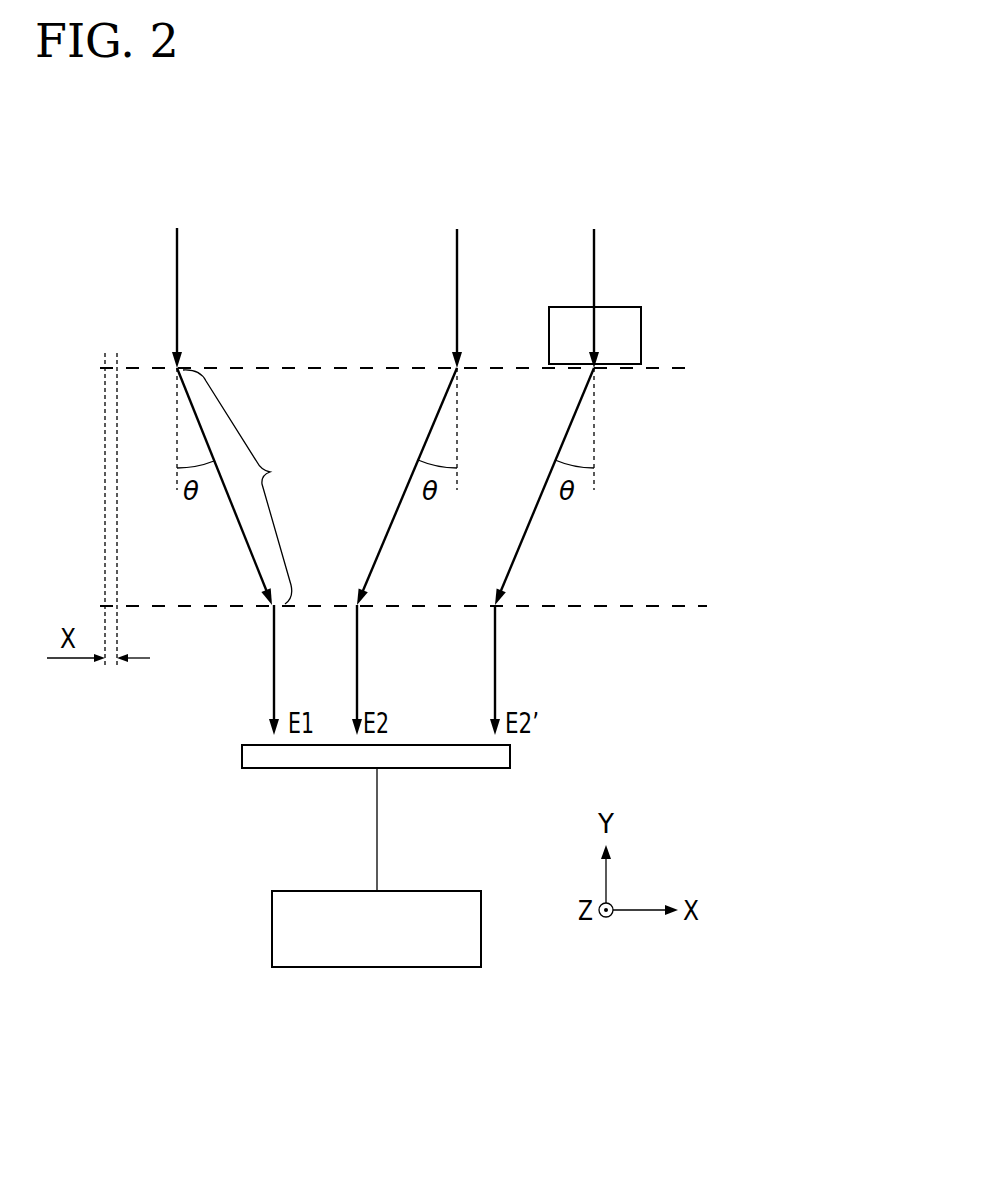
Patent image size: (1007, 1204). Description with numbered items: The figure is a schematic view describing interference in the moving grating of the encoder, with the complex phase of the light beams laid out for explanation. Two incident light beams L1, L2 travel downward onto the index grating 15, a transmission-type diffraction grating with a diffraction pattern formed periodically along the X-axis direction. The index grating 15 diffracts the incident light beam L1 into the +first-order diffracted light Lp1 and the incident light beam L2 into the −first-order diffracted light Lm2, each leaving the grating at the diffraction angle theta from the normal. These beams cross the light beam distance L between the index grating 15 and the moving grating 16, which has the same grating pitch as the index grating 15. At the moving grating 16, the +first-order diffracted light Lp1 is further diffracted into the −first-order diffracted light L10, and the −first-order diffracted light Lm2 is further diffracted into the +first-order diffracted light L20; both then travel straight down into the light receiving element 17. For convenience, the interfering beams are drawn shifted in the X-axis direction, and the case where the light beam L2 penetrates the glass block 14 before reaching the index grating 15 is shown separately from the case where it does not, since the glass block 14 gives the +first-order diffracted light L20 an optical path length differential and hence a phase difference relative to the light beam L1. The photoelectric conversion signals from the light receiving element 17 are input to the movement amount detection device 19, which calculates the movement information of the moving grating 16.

The glass block 14 is at (678, 326).
The index grating 15 is at (722, 371).
The moving grating 16 is at (723, 608).
The light receiving element 17 is at (433, 770).
The movement amount detection device 19 is at (380, 968).
The incident light beam L1 is at (177, 257).
The incident light beam L2 is at (457, 257).
The light beam distance L is at (237, 487).
The +first-order diffracted light Lp1 is at (242, 532).
The −first-order diffracted light Lm2 is at (395, 530).
The −first-order diffracted light L10 is at (274, 677).
The +first-order diffracted light L20 is at (357, 640).